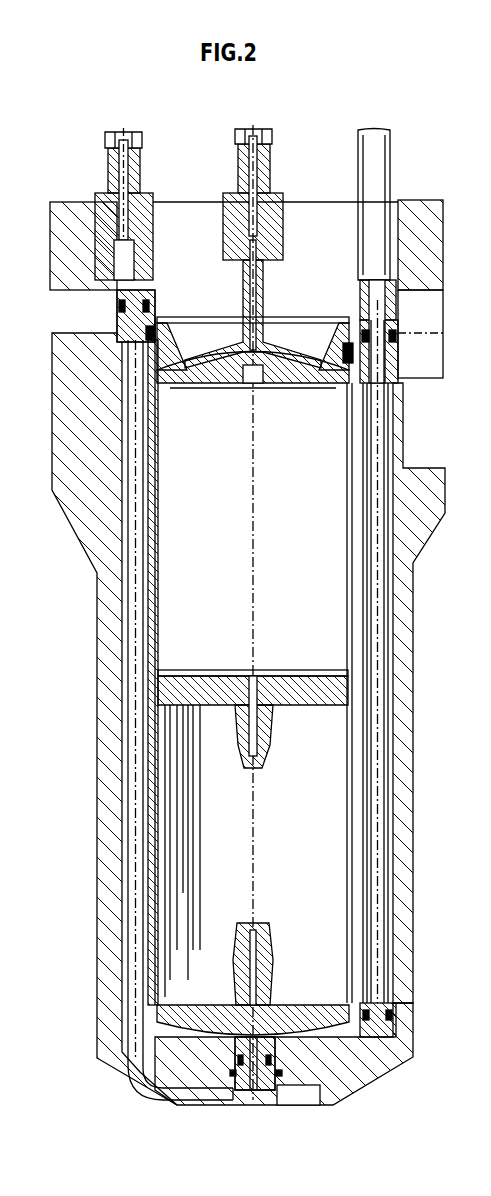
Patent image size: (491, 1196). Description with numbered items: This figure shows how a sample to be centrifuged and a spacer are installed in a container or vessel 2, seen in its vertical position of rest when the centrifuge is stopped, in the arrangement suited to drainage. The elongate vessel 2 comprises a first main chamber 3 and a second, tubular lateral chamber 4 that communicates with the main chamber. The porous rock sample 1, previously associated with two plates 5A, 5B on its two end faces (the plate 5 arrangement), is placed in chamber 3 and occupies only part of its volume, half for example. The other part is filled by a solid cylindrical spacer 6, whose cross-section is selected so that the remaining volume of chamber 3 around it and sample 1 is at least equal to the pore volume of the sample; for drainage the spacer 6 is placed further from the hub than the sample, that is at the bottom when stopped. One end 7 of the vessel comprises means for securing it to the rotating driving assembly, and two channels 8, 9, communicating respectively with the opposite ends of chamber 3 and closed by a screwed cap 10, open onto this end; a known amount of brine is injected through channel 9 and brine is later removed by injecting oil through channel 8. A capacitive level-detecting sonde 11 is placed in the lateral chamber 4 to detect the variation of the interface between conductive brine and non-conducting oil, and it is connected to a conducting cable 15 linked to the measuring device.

The porous rock sample 1 is at (177, 605).
The elongate container or vessel 2 is at (78, 582).
The first main chamber 3 is at (358, 898).
The tubular lateral chamber 4 is at (390, 788).
The plate 5 is at (175, 678).
The plate 5A is at (200, 370).
The plate 5B is at (183, 1015).
The solid cylindrical spacer 6 is at (200, 773).
The end of the vessel 7 is at (440, 182).
The channel 8 is at (257, 298).
The channel 9 is at (150, 1073).
The screwed cap 10 is at (189, 185).
The capacitive level-detecting sonde 11 is at (378, 830).
The conducting cable 15 is at (365, 152).